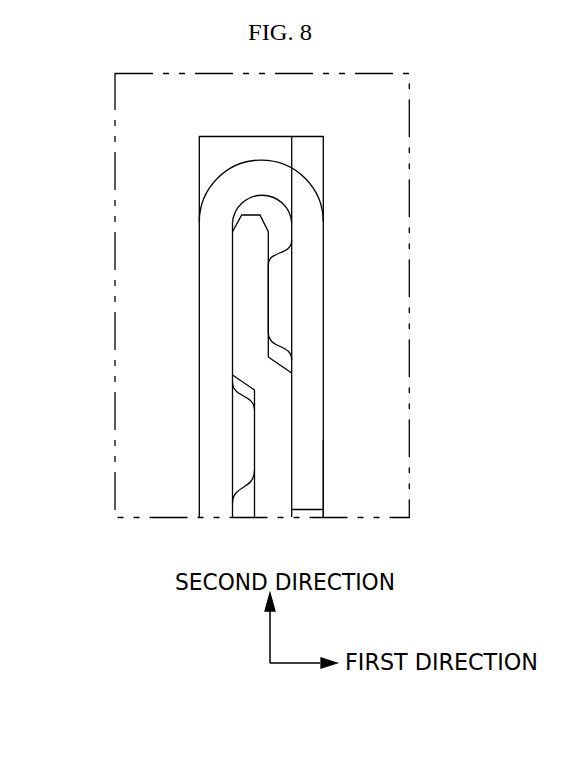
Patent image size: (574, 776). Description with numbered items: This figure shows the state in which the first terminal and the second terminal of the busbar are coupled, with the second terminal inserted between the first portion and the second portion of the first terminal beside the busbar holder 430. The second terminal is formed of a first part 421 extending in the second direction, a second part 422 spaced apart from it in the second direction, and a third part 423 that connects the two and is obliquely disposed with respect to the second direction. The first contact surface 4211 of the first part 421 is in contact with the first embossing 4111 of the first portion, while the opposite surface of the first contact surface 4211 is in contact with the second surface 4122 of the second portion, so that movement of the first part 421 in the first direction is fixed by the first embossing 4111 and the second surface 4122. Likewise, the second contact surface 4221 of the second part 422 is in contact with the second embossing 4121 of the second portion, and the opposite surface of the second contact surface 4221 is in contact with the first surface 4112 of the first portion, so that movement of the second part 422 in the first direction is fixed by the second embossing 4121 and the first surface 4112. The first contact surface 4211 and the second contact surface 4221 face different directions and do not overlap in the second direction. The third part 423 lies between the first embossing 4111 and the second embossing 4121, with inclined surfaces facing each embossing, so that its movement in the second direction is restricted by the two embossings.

The busbar holder 430 is at (375, 178).
The first part 421 is at (247, 273).
The first contact surface 4211 is at (272, 278).
The first embossing 4111 is at (277, 307).
The second surface 4122 is at (232, 313).
The third part 423 is at (262, 375).
The second contact surface 4221 is at (254, 426).
The second embossing 4121 is at (237, 464).
The first surface 4112 is at (292, 447).
The second part 422 is at (272, 494).